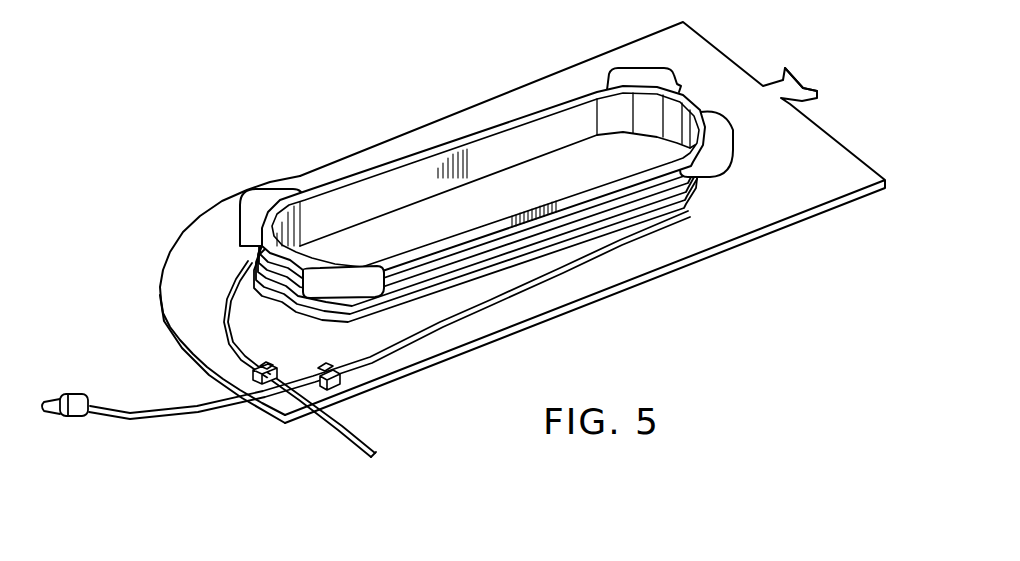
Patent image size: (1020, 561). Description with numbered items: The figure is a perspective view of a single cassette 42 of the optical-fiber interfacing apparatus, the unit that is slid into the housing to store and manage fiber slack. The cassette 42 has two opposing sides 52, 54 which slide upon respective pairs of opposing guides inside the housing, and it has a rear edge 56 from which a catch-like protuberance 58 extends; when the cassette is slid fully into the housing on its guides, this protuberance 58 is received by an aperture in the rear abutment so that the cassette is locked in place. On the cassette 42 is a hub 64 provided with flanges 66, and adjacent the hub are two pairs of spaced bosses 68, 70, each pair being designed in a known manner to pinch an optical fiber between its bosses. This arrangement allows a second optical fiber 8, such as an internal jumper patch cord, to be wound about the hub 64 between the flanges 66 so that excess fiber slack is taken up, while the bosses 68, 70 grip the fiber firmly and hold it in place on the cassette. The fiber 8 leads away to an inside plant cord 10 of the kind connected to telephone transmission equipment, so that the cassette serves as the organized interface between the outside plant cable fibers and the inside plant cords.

The second optical fibers 8 is at (437, 272).
The inside plant cords 10 is at (70, 395).
The cassette 42 is at (499, 165).
The opposing side 52 is at (475, 104).
The opposing side 54 is at (608, 297).
The rear edge 56 is at (730, 58).
The catch-like protuberance 58 is at (806, 80).
The hub 64 is at (568, 100).
The flanges 66 is at (486, 157).
The spaced bosses 68 is at (335, 383).
The spaced bosses 70 is at (250, 376).